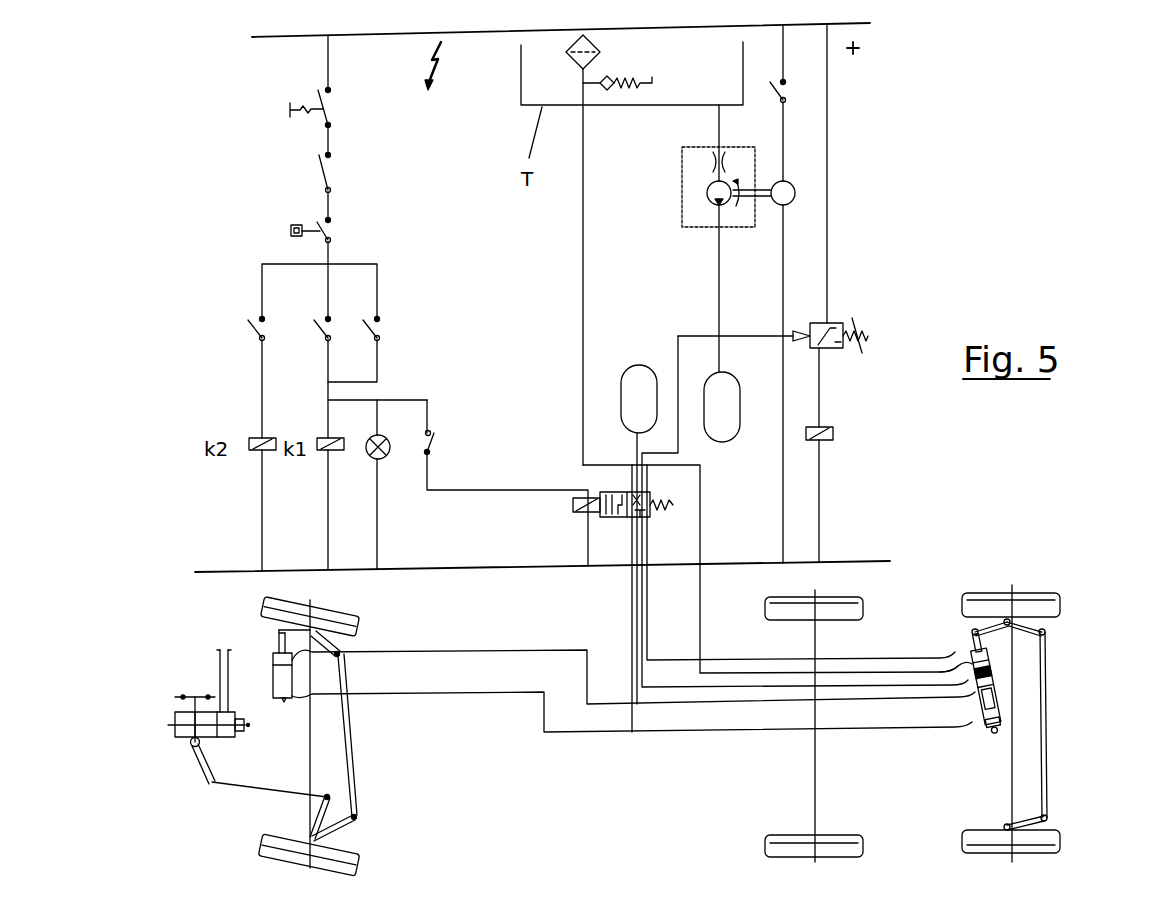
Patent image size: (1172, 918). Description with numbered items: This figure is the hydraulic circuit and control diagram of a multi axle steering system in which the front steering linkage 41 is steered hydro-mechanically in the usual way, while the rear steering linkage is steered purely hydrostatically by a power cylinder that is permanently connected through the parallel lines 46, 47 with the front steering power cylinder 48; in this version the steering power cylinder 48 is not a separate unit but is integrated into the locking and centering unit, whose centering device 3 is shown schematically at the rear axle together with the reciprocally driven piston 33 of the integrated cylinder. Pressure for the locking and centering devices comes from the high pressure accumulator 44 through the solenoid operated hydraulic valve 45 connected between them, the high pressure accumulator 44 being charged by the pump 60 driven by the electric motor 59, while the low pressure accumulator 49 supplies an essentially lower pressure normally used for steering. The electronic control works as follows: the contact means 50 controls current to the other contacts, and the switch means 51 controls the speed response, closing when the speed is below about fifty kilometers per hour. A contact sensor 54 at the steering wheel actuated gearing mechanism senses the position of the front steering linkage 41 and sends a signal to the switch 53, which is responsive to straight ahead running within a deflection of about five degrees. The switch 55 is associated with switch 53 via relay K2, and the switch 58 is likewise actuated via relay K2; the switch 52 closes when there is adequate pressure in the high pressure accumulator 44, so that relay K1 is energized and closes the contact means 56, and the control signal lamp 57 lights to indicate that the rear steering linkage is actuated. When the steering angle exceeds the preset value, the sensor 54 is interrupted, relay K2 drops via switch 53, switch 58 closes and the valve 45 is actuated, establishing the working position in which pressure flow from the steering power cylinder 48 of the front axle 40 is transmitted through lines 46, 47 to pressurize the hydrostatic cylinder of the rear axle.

The centering device 3 is at (986, 686).
The piston 33 is at (980, 707).
The rear axle 40 is at (340, 680).
The front steering linkage 41 is at (266, 636).
The high pressure accumulator 44 is at (723, 425).
The hydraulic valve 45 is at (573, 505).
The parallel line 46 is at (468, 648).
The parallel line 47 is at (478, 694).
The steering power cylinder 48 is at (277, 681).
The low pressure accumulator 49 is at (639, 378).
The contact means 50 is at (326, 110).
The switch means 51 is at (325, 174).
The switch 52 is at (330, 236).
The switch 53 is at (257, 331).
The contact sensor 54 is at (194, 694).
The switch 55 is at (321, 331).
The contact means 56 is at (386, 316).
The control signal lamp 57 is at (385, 460).
The switch 58 is at (433, 442).
The electric motor 59 is at (796, 190).
The pump 60 is at (711, 198).